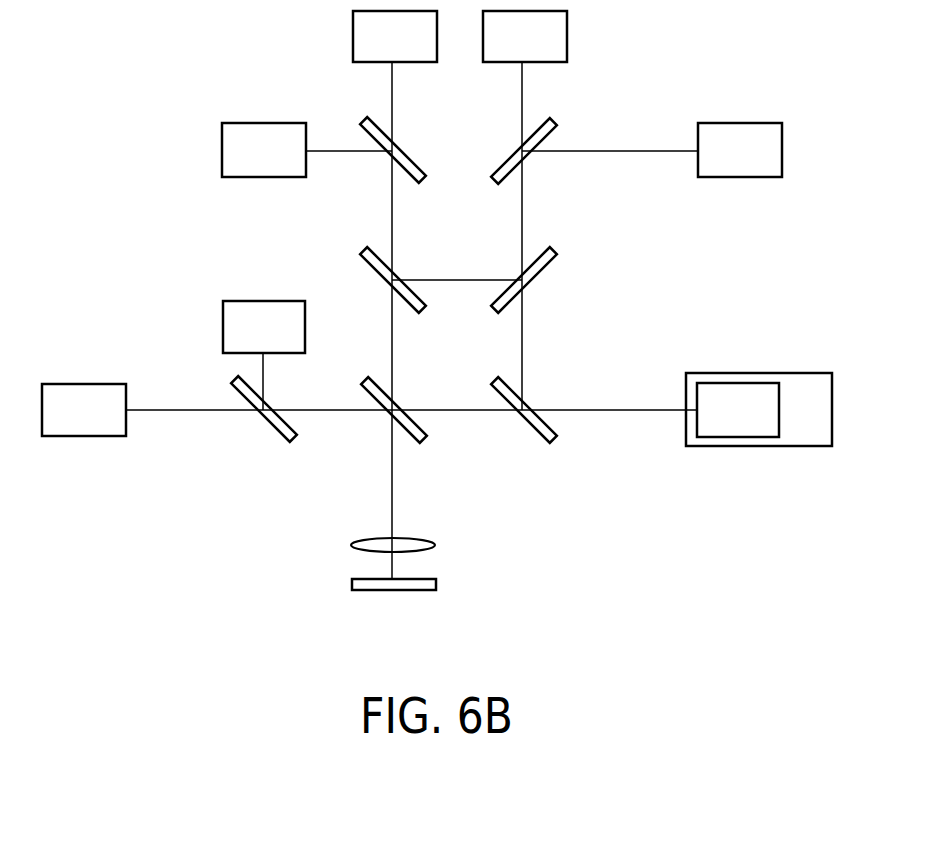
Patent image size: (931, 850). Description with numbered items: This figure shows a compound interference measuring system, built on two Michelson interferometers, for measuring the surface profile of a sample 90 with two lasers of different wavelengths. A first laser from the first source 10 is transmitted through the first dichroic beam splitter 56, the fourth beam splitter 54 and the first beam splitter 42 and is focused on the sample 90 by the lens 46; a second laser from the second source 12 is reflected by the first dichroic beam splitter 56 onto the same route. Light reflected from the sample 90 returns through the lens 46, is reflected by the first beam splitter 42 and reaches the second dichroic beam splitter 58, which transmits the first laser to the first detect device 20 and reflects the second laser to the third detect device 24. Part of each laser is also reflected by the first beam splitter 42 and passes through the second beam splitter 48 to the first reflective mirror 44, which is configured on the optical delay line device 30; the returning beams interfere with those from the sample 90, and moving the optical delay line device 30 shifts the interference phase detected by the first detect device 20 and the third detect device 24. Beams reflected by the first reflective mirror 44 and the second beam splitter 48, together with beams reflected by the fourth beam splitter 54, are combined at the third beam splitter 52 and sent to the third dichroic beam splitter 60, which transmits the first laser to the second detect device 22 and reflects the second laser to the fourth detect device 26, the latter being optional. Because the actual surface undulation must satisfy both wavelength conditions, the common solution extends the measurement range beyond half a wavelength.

The first source 10 is at (395, 36).
The second detect device 22 is at (525, 36).
The second source 12 is at (264, 150).
The fourth detect device 26 is at (740, 150).
The first detect device 20 is at (84, 410).
The third detect device 24 is at (264, 327).
The optical delay line device 30 is at (759, 409).
The first reflective mirror 44 is at (738, 410).
The first dichroic beam splitter 56 is at (360, 122).
The third dichroic beam splitter 60 is at (557, 123).
The fourth beam splitter 54 is at (360, 252).
The third beam splitter 52 is at (557, 253).
The second dichroic beam splitter 58 is at (232, 380).
The first beam splitter 42 is at (420, 445).
The second beam splitter 48 is at (550, 445).
The lens 46 is at (357, 542).
The sample 90 is at (357, 592).